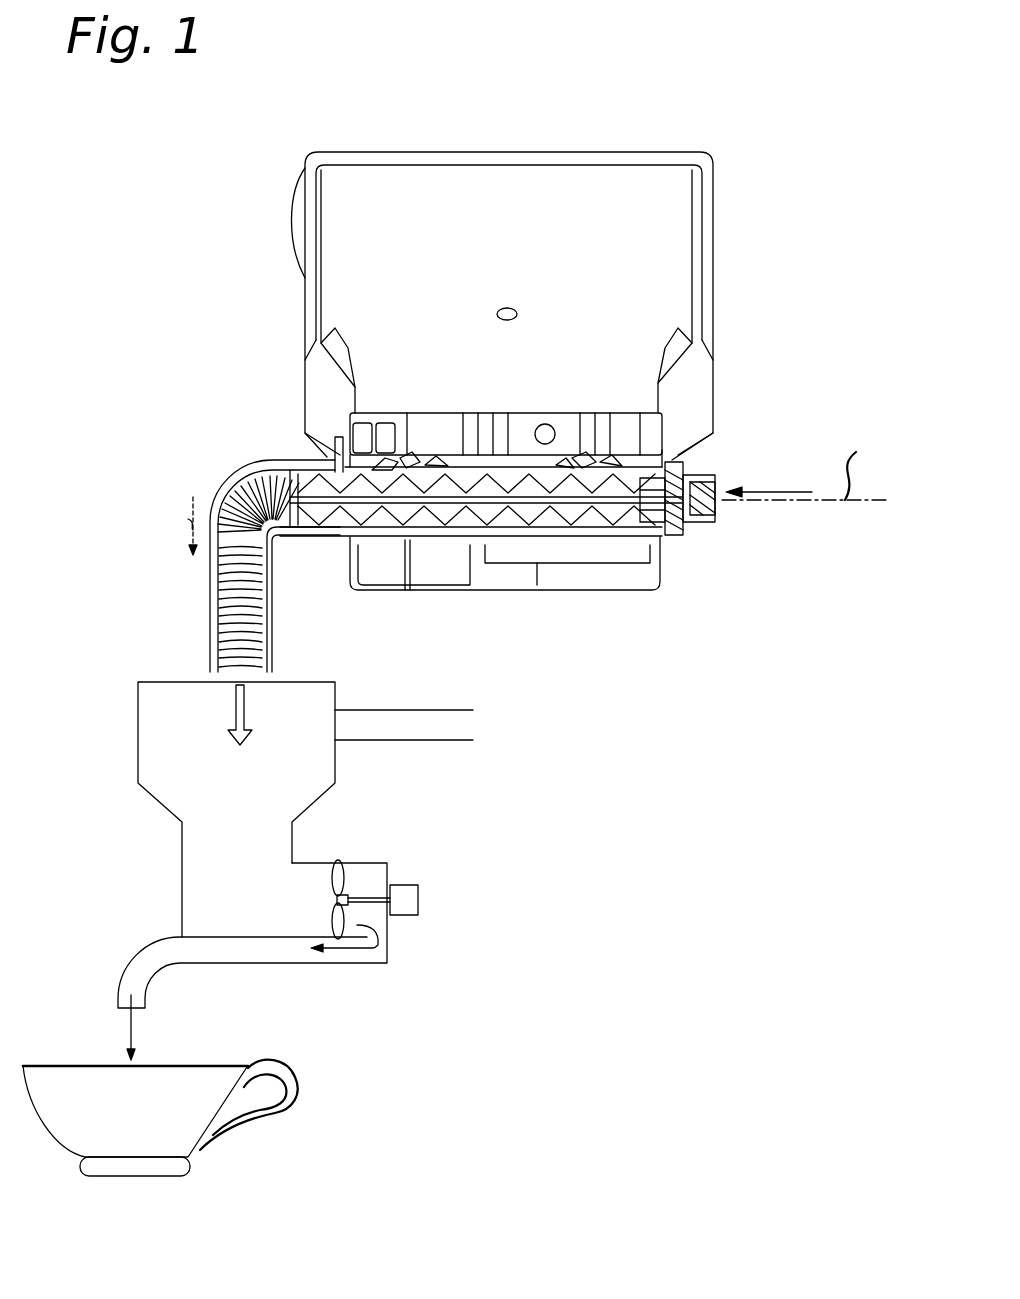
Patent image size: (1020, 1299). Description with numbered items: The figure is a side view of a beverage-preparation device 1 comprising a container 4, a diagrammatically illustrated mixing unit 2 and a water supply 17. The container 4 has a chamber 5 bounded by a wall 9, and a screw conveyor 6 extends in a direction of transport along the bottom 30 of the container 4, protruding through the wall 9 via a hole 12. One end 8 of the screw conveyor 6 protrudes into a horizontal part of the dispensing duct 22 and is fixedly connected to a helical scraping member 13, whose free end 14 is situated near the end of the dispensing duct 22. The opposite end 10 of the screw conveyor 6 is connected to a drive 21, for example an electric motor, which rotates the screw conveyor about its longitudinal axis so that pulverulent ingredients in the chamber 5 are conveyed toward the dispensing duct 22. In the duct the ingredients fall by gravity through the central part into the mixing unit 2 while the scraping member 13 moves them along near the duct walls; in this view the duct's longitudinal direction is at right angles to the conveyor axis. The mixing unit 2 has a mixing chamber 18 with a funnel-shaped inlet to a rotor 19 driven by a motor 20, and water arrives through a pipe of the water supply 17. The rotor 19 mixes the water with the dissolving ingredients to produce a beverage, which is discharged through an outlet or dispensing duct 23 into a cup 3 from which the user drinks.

The beverage-preparation device 1 is at (153, 449).
The mixing unit 2 is at (134, 719).
The cup 3 is at (92, 1077).
The container 4 is at (283, 304).
The chamber 5 is at (660, 249).
The screw conveyor 6 is at (582, 502).
The end of the screw conveyor 8 is at (325, 497).
The wall 9 is at (700, 292).
The end of the screw conveyor 10 is at (653, 500).
The hole 12 is at (362, 510).
The helical scraping member 13 is at (243, 623).
The free end of the scraping member 14 is at (225, 657).
The water supply 17 is at (410, 728).
The mixing chamber 18 is at (185, 767).
The rotor 19 is at (342, 880).
The motor 20 is at (408, 897).
The drive 21 is at (683, 512).
The dispensing duct 22 is at (210, 596).
The outlet or dispensing duct 23 is at (143, 963).
The bottom 30 is at (547, 528).